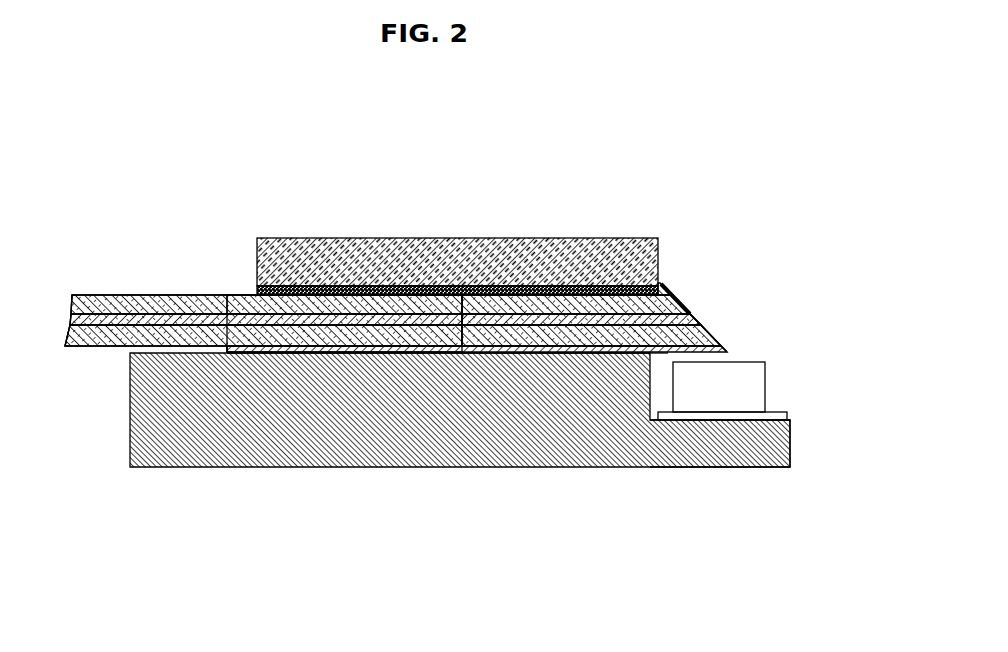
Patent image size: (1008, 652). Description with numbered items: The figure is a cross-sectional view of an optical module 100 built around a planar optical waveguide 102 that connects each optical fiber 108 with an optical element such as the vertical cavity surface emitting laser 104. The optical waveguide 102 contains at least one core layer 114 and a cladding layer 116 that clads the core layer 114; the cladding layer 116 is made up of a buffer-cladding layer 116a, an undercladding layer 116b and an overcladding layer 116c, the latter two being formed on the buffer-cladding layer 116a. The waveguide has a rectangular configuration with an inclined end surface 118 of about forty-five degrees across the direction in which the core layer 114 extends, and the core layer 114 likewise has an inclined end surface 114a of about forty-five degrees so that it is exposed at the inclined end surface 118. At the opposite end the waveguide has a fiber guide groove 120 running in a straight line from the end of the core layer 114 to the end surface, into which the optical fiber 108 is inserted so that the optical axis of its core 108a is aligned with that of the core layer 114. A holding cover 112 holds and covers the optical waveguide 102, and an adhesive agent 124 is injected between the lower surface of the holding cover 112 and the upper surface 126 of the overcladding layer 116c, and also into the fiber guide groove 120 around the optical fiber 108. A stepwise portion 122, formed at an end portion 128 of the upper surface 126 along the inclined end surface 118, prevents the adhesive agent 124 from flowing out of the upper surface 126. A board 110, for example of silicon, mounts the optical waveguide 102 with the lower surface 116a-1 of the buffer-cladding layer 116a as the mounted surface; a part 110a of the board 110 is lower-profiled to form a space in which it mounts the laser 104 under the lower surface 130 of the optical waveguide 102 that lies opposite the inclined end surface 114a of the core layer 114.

The optical module 100 is at (603, 87).
The optical waveguide 102 is at (448, 362).
The vertical cavity surface emitting LASER (VCSEL) 104 is at (748, 388).
The optical fiber 108 is at (254, 271).
The core of the optical fiber 108a is at (120, 316).
The board 110 is at (158, 452).
The part of the board 110a is at (735, 420).
The holding cover 112 is at (393, 238).
The core layer 114 is at (550, 318).
The inclined end surface of the core layer 114a is at (692, 320).
The cladding layer 116 is at (504, 379).
The buffer-cladding layer 116a is at (360, 353).
The lower surface of the buffer-cladding layer 116a-1 is at (295, 347).
The undercladding layer 116b is at (530, 335).
The overcladding layer 116c is at (581, 300).
The inclined end surface of the optical waveguide 118 is at (690, 310).
The fiber guide groove 120 is at (333, 300).
The stepwise portion 122 is at (664, 283).
The adhesive agent 124 is at (510, 286).
The upper surface of the overcladding layer 126 is at (581, 296).
The end portion 128 is at (670, 280).
The lower surface of the optical waveguide 130 is at (668, 353).